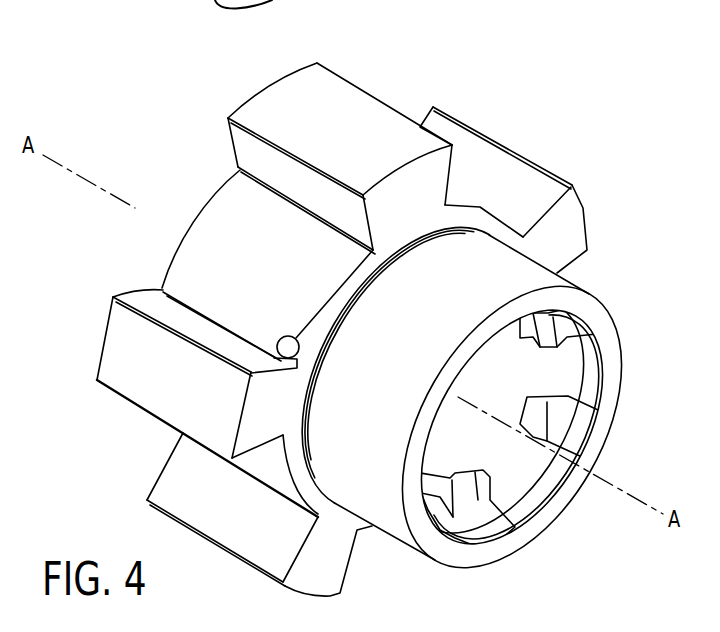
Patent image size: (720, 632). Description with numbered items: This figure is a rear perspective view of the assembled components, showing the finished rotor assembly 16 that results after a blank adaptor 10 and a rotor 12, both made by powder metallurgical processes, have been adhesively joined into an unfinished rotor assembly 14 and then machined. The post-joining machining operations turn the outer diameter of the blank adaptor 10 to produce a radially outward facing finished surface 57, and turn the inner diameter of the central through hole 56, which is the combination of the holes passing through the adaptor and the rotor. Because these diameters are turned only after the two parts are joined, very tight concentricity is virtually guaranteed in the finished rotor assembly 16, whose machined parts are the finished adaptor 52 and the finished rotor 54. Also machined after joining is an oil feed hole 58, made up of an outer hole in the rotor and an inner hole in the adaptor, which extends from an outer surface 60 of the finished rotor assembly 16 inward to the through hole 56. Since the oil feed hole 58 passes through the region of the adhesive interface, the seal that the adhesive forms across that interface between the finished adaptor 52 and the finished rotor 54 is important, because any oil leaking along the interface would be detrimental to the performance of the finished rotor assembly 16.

The blank adaptor 10 is at (390, 520).
The rotor 12 is at (122, 353).
The rotor assembly 14 is at (190, 167).
The finished rotor assembly 16 is at (488, 67).
The finished adaptor 52 is at (523, 278).
The finished rotor 54 is at (185, 272).
The through hole 56 is at (472, 425).
The radially outward facing finished surface 57 is at (447, 329).
The oil feed hole 58 is at (278, 340).
The outer surface 60 is at (230, 203).